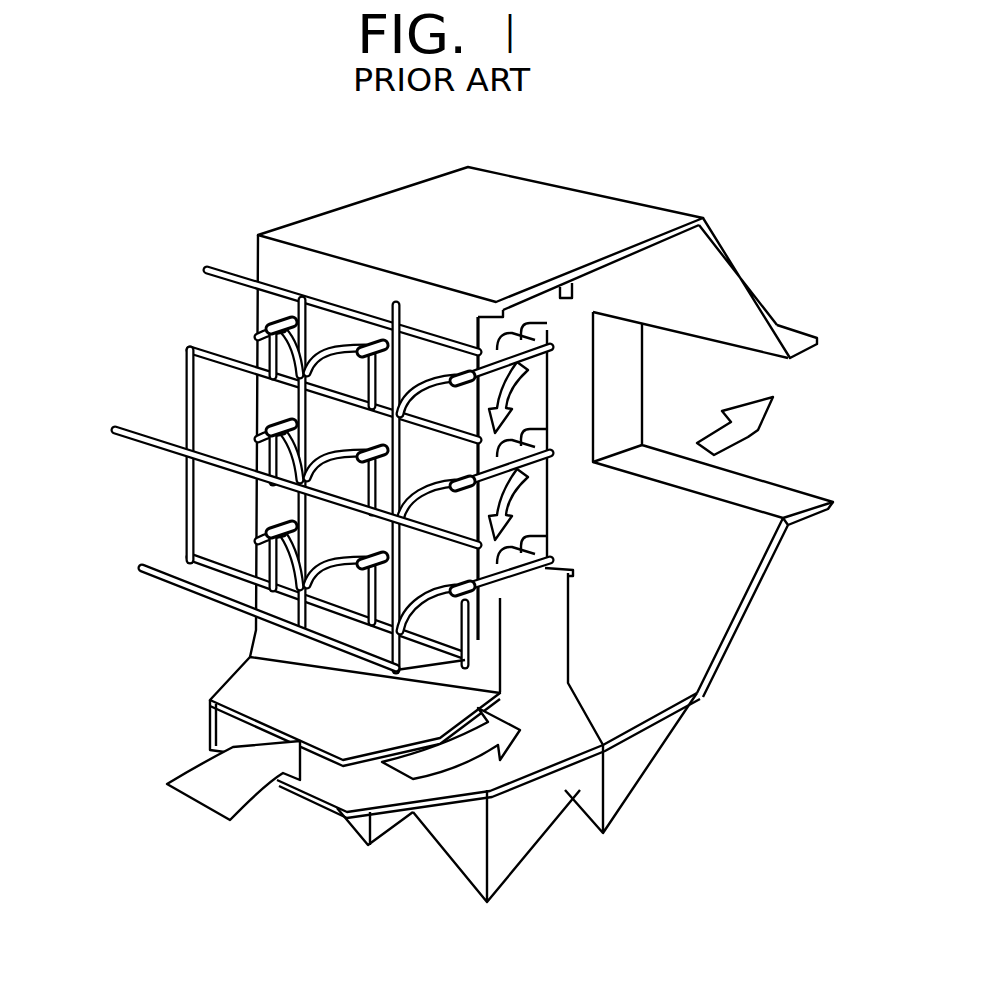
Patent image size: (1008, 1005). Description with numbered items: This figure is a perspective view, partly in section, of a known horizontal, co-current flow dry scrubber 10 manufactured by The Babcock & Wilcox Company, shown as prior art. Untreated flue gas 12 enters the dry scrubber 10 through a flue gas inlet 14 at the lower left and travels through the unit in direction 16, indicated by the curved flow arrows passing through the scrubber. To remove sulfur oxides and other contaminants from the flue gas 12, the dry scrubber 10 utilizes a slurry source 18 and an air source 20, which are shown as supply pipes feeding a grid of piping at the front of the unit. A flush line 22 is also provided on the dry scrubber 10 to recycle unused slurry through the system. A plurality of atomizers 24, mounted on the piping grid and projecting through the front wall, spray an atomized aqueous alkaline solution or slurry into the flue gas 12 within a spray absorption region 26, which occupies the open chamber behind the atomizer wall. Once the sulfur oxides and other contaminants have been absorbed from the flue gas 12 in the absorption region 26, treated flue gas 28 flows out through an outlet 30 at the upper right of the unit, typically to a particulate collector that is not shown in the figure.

The dry scrubber 10 is at (752, 166).
The untreated flue gas 12 is at (213, 793).
The flue gas inlet 14 is at (336, 793).
The direction 16 is at (508, 407).
The slurry source 18 is at (132, 252).
The air source 20 is at (57, 410).
The flush line 22 is at (120, 563).
The atomizers 24 is at (464, 376).
The spray absorption region 26 is at (696, 568).
The treated flue gas 28 is at (731, 437).
The outlet 30 is at (802, 399).